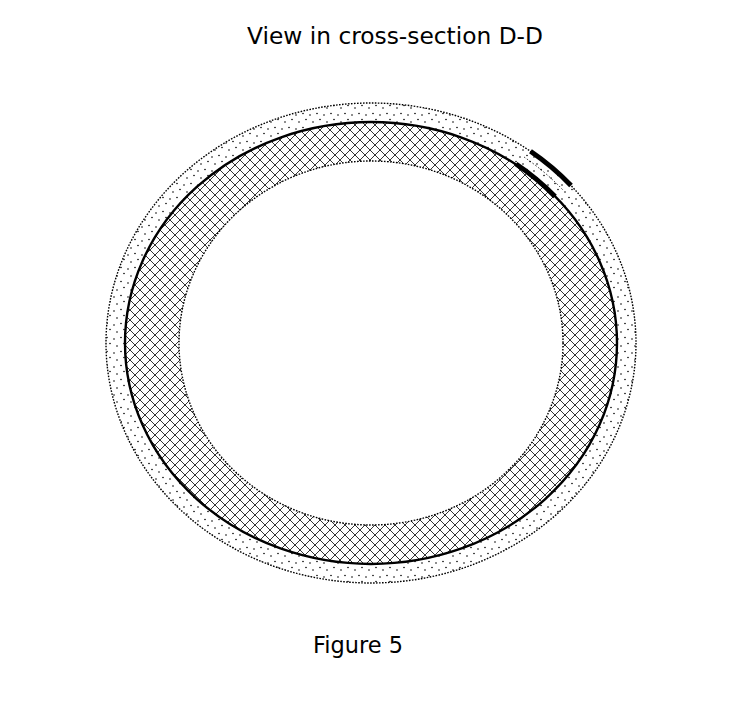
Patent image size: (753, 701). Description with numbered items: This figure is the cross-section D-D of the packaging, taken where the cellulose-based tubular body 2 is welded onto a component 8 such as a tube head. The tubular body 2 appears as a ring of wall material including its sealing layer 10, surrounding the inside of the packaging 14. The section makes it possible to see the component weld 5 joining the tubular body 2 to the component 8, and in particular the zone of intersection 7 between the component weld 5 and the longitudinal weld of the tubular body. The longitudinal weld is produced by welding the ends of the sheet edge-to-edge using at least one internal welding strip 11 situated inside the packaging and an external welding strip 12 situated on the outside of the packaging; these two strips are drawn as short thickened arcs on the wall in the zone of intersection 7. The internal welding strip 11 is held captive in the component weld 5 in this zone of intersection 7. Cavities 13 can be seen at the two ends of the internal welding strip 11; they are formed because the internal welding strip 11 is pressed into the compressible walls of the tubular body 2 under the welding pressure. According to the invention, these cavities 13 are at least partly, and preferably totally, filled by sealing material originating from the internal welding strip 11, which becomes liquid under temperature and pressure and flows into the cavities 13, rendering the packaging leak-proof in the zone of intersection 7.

The tubular body 2 is at (338, 343).
The component weld 5 is at (210, 170).
The zone of intersection of the longitudinal weld and of the component weld 7 is at (615, 167).
The component 8 is at (145, 328).
The sealing layer of the tubular body 10 is at (142, 277).
The internal welding strip 11 is at (538, 182).
The external welding strip 12 is at (548, 172).
The cavities 13 is at (516, 162).
The inside of the packaging 14 is at (371, 343).